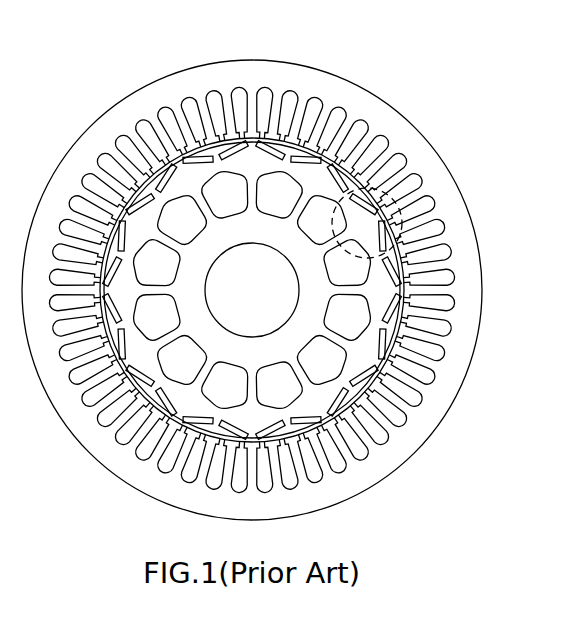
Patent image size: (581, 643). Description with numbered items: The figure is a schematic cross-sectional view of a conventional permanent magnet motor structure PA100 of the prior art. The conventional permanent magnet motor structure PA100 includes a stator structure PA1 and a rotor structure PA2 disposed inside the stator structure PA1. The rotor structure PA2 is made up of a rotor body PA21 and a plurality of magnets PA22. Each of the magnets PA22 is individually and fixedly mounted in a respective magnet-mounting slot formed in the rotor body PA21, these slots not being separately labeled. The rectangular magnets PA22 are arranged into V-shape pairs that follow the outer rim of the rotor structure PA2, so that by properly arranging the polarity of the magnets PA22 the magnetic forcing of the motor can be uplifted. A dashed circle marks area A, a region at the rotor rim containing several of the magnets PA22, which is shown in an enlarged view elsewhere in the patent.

The conventional permanent magnet motor structure PA100 is at (87, 71).
The stator structure PA1 is at (254, 62).
The rotor structure PA2 is at (408, 298).
The rotor body PA21 is at (358, 362).
The magnets PA22 is at (386, 350).
The area A is at (401, 216).